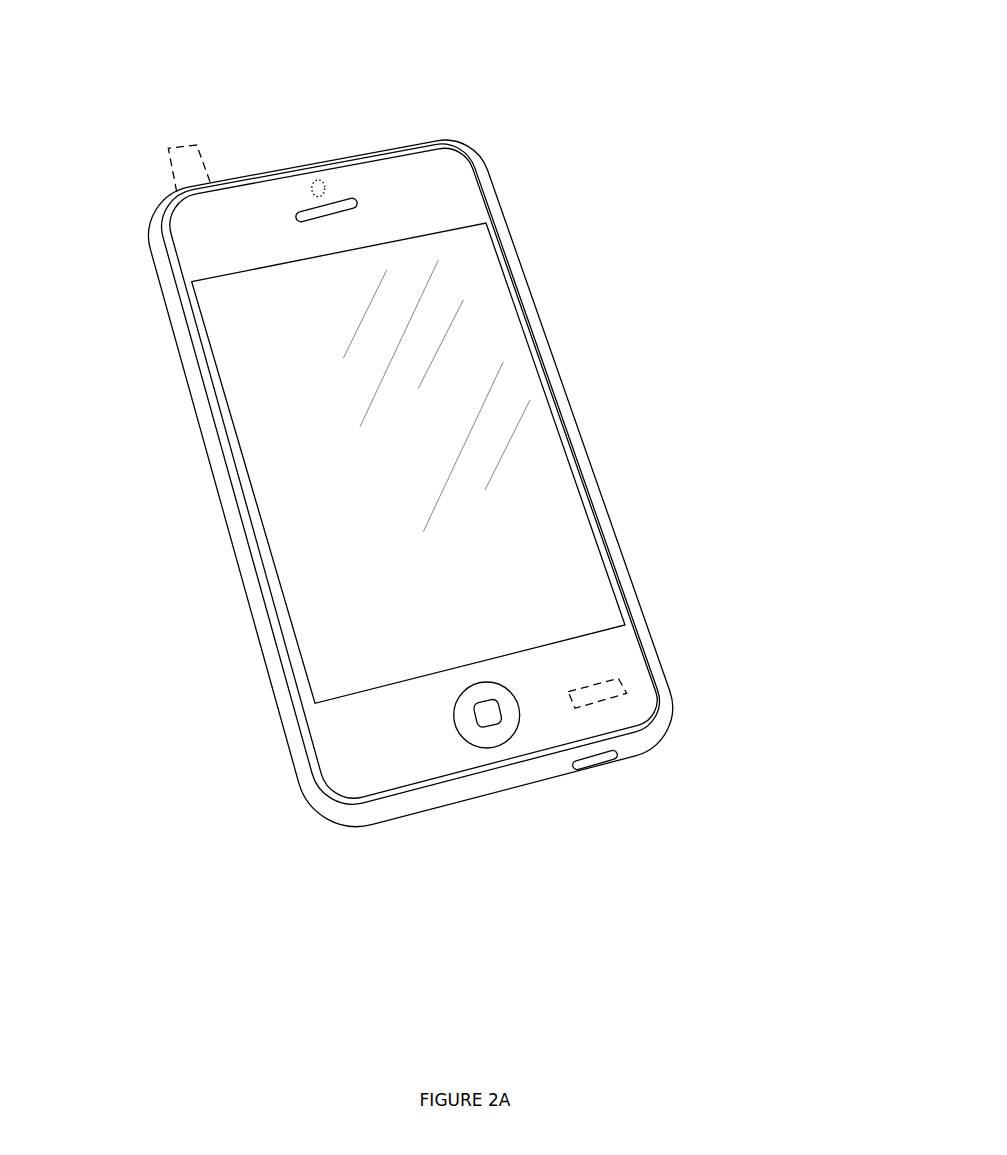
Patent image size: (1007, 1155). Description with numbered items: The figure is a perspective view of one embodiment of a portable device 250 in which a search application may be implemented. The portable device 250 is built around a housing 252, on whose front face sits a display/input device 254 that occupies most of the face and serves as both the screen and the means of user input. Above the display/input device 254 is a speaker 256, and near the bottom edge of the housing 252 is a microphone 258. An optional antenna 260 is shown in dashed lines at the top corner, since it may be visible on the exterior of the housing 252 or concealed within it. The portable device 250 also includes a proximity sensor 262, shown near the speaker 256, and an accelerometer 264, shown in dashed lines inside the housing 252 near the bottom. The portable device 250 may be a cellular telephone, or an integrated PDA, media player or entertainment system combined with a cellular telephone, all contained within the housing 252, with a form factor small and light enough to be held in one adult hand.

The portable device 250 is at (472, 448).
The housing 252 is at (553, 357).
The display/input device 254 is at (508, 586).
The speaker 256 is at (360, 197).
The microphone 258 is at (585, 768).
The antenna 260 is at (168, 148).
The proximity sensor 262 is at (318, 180).
The accelerometer 264 is at (625, 698).